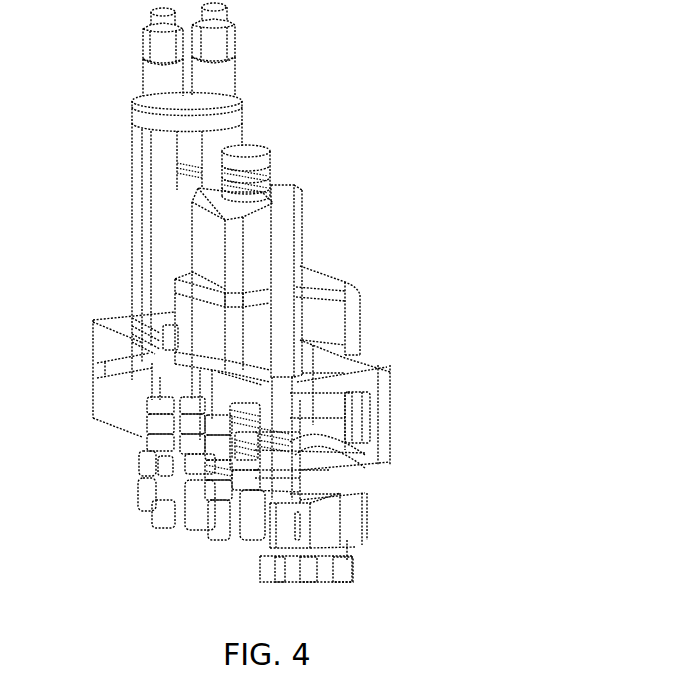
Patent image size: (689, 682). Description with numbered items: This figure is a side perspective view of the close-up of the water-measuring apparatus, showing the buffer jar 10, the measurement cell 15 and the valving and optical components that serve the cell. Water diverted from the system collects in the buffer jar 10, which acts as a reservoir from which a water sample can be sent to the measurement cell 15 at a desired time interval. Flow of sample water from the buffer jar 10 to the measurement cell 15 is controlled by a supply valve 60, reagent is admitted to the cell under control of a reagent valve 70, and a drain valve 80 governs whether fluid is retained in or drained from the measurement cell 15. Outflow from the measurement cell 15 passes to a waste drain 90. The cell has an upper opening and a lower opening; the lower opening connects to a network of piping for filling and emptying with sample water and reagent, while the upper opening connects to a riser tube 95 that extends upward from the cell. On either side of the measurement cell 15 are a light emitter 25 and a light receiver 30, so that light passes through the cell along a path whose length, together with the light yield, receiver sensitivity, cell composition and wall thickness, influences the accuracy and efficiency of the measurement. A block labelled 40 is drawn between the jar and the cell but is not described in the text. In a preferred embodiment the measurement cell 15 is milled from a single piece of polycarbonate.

The buffer jar 10 is at (238, 107).
The measurement cell 15 is at (291, 461).
The light emitter 25 is at (257, 444).
The light receiver 30 is at (305, 432).
The valve block 40 is at (198, 207).
The supply valve 60 is at (197, 512).
The reagent valve 70 is at (232, 524).
The drain valve 80 is at (268, 533).
The waste drain 90 is at (268, 568).
The riser tube 95 is at (286, 237).